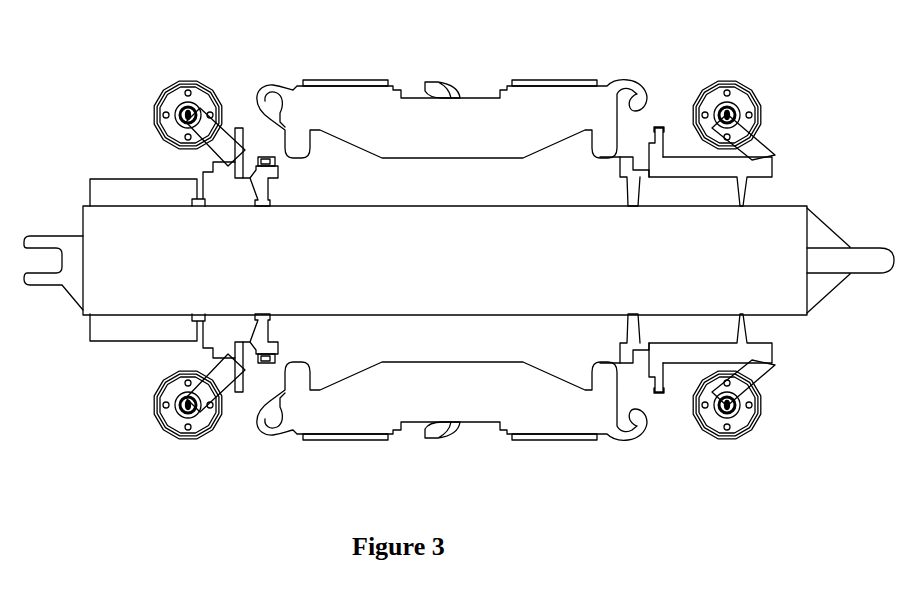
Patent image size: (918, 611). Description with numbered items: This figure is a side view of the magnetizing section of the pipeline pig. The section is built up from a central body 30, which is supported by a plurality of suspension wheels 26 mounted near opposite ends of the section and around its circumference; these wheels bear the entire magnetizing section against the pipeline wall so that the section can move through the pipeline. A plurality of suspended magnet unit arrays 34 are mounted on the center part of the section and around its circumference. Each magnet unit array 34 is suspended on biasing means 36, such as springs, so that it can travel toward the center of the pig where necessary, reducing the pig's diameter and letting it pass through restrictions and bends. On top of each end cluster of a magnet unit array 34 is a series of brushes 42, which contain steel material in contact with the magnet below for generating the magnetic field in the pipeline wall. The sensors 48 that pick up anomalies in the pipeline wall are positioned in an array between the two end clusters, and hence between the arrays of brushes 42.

The suspension wheels 26 is at (192, 90).
The central body 30 is at (497, 294).
The magnet unit array 34 is at (560, 100).
The biasing means 36 is at (277, 150).
The brushes 42 is at (342, 84).
The sensors 48 is at (435, 81).